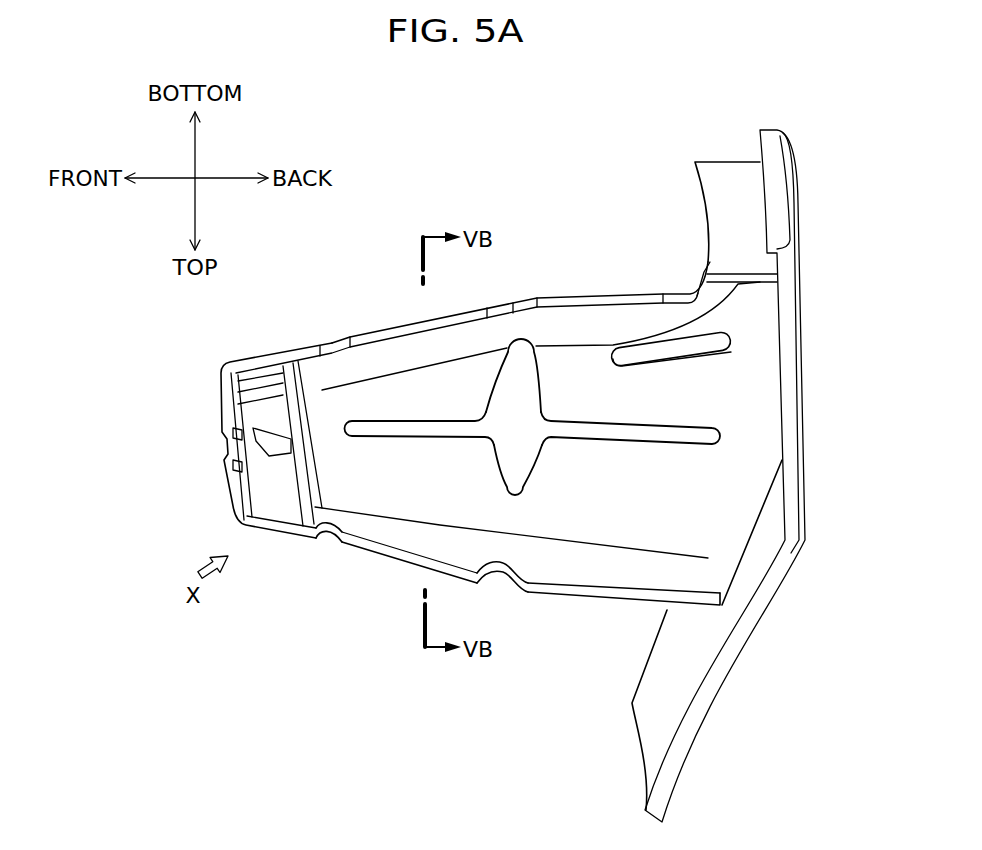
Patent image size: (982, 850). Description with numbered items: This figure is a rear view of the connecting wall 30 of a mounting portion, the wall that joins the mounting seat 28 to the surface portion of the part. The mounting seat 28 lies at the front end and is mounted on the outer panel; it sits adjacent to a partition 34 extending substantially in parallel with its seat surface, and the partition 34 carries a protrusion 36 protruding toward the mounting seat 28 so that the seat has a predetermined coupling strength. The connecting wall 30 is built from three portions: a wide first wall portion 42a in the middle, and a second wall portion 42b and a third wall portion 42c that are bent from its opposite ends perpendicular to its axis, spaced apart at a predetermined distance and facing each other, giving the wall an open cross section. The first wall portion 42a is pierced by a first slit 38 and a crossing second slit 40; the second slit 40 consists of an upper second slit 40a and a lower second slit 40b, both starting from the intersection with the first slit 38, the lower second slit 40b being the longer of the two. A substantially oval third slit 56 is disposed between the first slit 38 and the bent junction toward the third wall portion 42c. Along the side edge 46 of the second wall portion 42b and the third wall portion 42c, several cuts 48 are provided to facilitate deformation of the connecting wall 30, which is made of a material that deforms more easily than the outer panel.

The mounting seat 28 is at (220, 397).
The connecting wall 30 is at (391, 319).
The partition 34 is at (293, 412).
The protrusion 36 is at (280, 456).
The first slit 38 is at (721, 427).
The second slit 40 is at (505, 453).
The upper second slit 40a is at (527, 467).
The lower second slit 40b is at (528, 390).
The first wall portion 42a is at (695, 515).
The second wall portion 42b is at (648, 570).
The third wall portion 42c is at (595, 330).
The side edge 46 is at (472, 305).
The cut 48 is at (332, 343).
The third slit 56 is at (731, 340).